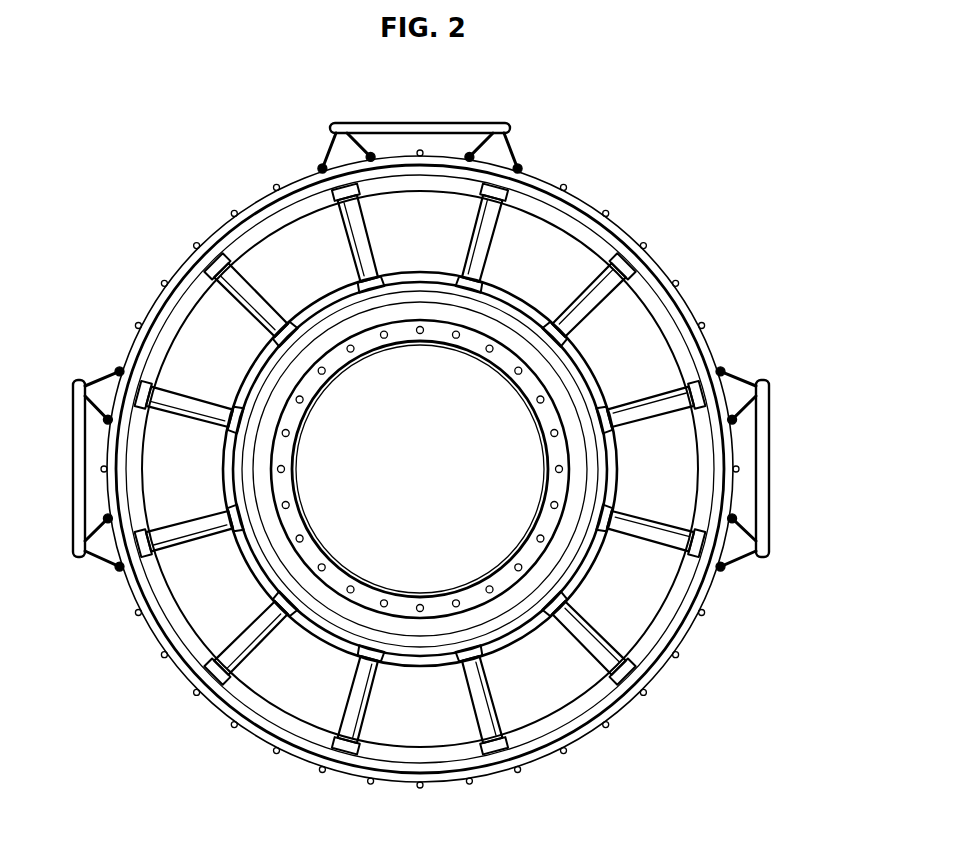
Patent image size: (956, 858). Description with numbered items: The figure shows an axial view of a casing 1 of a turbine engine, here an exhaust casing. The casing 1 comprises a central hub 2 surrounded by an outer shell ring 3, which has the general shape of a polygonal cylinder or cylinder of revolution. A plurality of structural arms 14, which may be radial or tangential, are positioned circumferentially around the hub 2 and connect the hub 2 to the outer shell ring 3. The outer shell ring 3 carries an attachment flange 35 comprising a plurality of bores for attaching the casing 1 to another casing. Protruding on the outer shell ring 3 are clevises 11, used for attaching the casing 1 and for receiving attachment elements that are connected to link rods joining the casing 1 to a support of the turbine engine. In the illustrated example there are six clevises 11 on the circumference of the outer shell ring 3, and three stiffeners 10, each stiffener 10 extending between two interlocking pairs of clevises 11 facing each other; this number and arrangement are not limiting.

The casing 1 is at (670, 180).
The hub 2 is at (420, 298).
The outer shell ring 3 is at (172, 612).
The stiffener 10 is at (762, 467).
The clevis 11 is at (738, 370).
The structural arm 14 is at (593, 631).
The attachment flange 35 is at (122, 322).